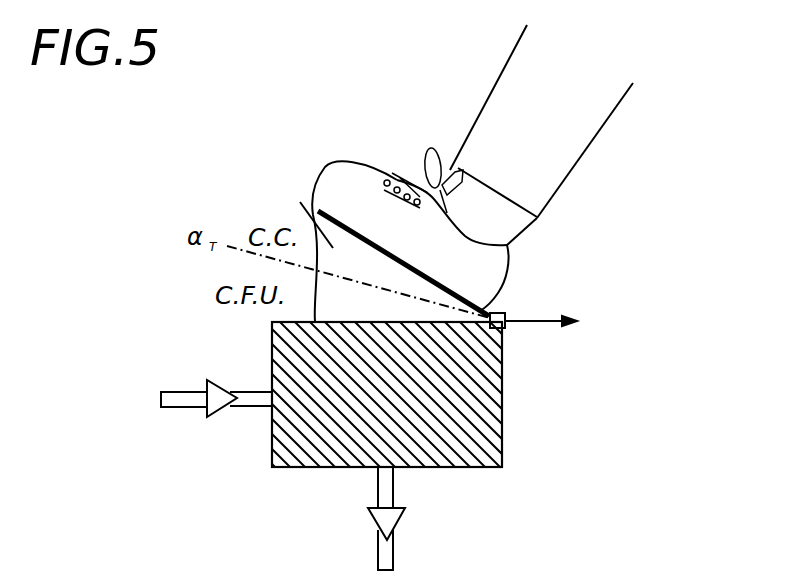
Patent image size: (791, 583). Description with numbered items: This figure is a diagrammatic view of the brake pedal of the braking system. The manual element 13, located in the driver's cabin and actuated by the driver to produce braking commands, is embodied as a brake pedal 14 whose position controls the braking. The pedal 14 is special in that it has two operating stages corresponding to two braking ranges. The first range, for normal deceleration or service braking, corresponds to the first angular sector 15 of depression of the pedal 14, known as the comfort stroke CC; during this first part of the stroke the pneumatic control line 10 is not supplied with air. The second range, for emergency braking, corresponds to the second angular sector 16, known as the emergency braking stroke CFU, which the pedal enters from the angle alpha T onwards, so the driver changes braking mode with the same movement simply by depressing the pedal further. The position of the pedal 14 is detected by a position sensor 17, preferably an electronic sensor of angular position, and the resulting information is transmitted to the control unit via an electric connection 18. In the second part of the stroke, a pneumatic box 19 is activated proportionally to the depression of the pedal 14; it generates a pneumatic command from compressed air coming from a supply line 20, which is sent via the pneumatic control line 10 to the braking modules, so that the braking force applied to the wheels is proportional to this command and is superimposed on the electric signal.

The pneumatic control line 10 is at (387, 540).
The manual element 13 is at (342, 216).
The brake pedal 14 is at (342, 216).
The first angular sector 15 is at (330, 243).
The second angular sector 16 is at (333, 300).
The position sensor 17 is at (503, 312).
The electric connection 18 is at (530, 325).
The pneumatic box 19 is at (468, 468).
The supply line 20 is at (182, 407).